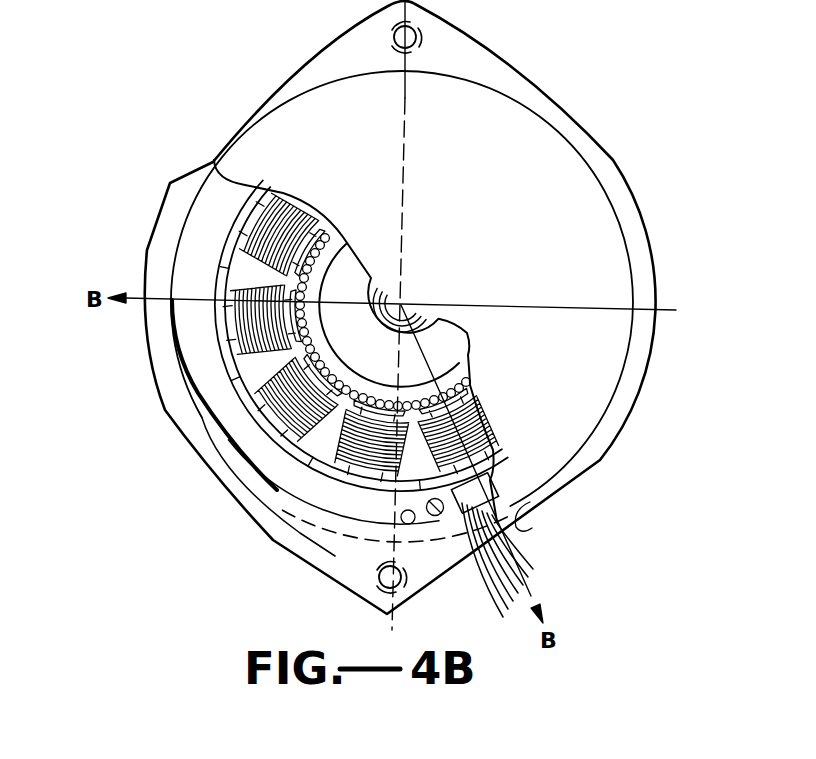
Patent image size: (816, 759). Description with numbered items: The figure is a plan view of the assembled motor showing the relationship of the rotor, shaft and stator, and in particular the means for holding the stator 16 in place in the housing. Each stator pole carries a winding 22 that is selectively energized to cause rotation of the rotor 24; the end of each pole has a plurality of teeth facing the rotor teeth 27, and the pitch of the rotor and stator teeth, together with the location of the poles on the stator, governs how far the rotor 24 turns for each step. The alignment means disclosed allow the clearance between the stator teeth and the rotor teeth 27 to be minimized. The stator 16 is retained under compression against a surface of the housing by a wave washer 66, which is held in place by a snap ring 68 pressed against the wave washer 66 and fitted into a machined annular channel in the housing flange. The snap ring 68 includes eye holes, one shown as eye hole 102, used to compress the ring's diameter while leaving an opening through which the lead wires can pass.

The stator 16 is at (468, 517).
The winding 22 is at (300, 445).
The rotor 24 is at (312, 356).
The rotor teeth 27 is at (347, 347).
The wave washer 66 is at (470, 493).
The snap ring 68 is at (337, 512).
The eye hole 102 is at (403, 521).